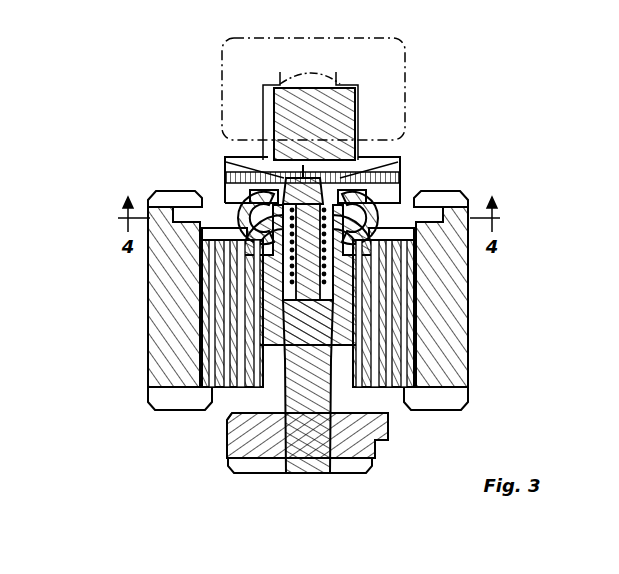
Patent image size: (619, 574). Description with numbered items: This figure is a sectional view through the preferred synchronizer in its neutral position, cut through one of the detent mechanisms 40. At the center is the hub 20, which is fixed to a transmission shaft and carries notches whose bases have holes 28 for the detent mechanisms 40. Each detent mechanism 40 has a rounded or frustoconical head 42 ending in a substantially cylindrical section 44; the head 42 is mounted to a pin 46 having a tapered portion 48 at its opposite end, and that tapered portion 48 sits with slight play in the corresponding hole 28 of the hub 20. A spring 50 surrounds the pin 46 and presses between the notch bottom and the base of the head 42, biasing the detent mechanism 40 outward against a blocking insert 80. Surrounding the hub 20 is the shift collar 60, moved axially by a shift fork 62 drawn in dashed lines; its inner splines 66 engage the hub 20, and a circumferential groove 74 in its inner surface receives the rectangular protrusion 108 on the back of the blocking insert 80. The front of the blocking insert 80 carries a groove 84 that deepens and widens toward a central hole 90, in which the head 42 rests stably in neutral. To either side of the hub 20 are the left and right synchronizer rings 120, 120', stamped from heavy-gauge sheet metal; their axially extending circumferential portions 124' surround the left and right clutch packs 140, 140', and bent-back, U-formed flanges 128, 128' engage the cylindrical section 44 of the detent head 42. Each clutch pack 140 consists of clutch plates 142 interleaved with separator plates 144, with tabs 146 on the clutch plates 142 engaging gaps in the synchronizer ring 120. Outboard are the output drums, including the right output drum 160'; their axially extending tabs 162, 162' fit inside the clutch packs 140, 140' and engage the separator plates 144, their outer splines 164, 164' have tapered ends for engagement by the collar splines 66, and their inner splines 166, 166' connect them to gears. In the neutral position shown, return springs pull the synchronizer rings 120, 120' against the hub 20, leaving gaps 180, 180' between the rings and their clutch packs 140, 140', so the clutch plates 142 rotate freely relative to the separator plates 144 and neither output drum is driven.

The hub 20 is at (399, 436).
The hole 28 is at (312, 380).
The detent mechanism 40 is at (303, 172).
The head 42 is at (296, 172).
The cylindrical section 44 is at (333, 178).
The pin 46 is at (205, 256).
The tapered portion 48 is at (225, 285).
The spring 50 is at (432, 290).
The shift collar 60 is at (318, 76).
The shift fork 62 is at (408, 48).
The splines 66 is at (403, 193).
The circumferential groove 74 is at (308, 165).
The blocking insert 80 is at (411, 171).
The groove 84 is at (260, 178).
The hole 90 is at (337, 177).
The rectangular protrusion 108 is at (333, 175).
The synchronizer ring 120 is at (307, 457).
The synchronizer ring 120' is at (324, 472).
The axially extending portions 124' is at (446, 260).
The flanges 128 is at (214, 197).
The flanges 128' is at (444, 196).
The clutch pack 140 is at (168, 316).
The clutch pack 140' is at (444, 313).
The clutch plates 142 is at (235, 330).
The separator plates 144 is at (245, 305).
The tabs 146 is at (235, 270).
The output drum 160' is at (511, 297).
The tabs 162 is at (200, 336).
The tabs 162' is at (439, 338).
The splines 164 is at (141, 274).
The splines 164' is at (484, 280).
The splines 166 is at (140, 419).
The splines 166' is at (464, 403).
The gap 180 is at (197, 457).
The gap 180' is at (445, 313).